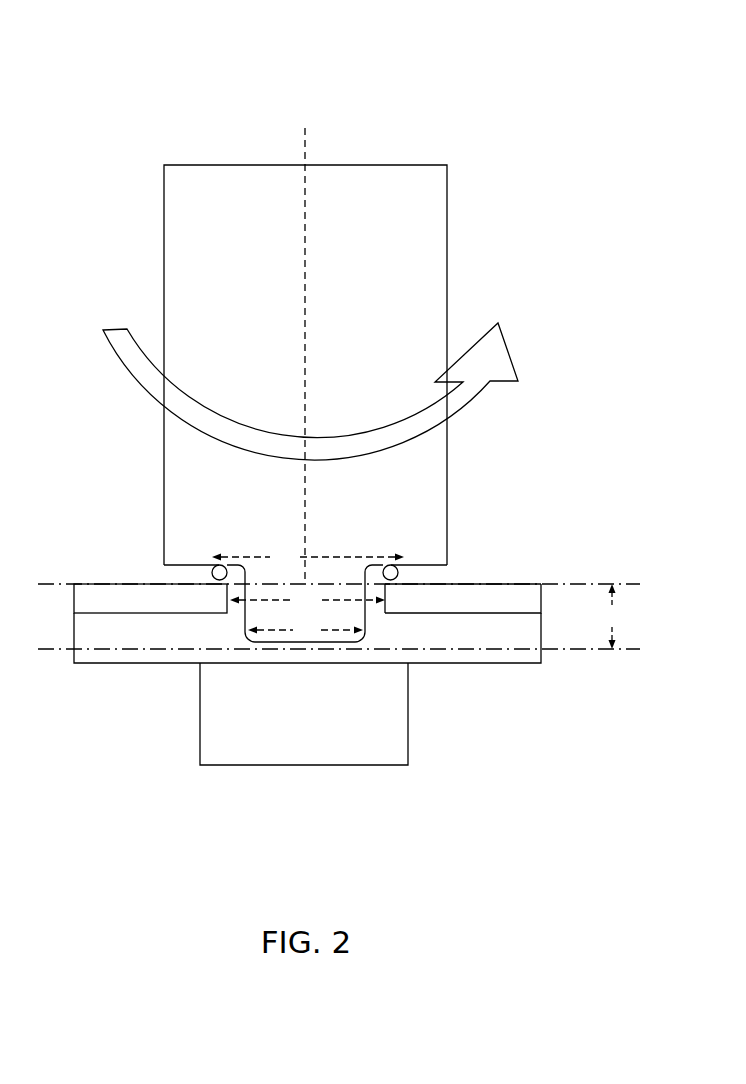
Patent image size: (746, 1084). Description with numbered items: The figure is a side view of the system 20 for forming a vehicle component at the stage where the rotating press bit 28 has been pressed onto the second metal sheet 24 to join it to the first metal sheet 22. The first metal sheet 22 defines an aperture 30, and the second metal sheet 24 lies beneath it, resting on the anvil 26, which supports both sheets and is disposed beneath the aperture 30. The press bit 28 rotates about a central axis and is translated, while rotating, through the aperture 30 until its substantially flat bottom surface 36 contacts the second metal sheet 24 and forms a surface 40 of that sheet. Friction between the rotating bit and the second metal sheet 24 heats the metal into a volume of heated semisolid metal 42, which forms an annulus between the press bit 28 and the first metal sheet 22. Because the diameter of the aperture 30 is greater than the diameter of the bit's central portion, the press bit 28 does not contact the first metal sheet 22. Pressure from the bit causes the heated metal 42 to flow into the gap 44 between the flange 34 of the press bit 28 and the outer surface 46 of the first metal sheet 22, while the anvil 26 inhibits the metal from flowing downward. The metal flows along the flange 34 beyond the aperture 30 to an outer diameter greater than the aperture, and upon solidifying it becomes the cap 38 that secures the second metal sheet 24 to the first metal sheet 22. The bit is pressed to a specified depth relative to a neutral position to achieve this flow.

The system 20 is at (513, 60).
The first metal sheet 22 is at (512, 584).
The second metal sheet 24 is at (515, 663).
The anvil 26 is at (200, 748).
The press bit 28 is at (383, 165).
The aperture 30 is at (338, 563).
The flange 34 is at (407, 560).
The bottom surface 36 is at (353, 640).
The cap 38 is at (220, 575).
The surface 40 is at (257, 640).
The heated semisolid metal 42 is at (380, 592).
The gap 44 is at (162, 572).
The outer surface 46 is at (533, 584).